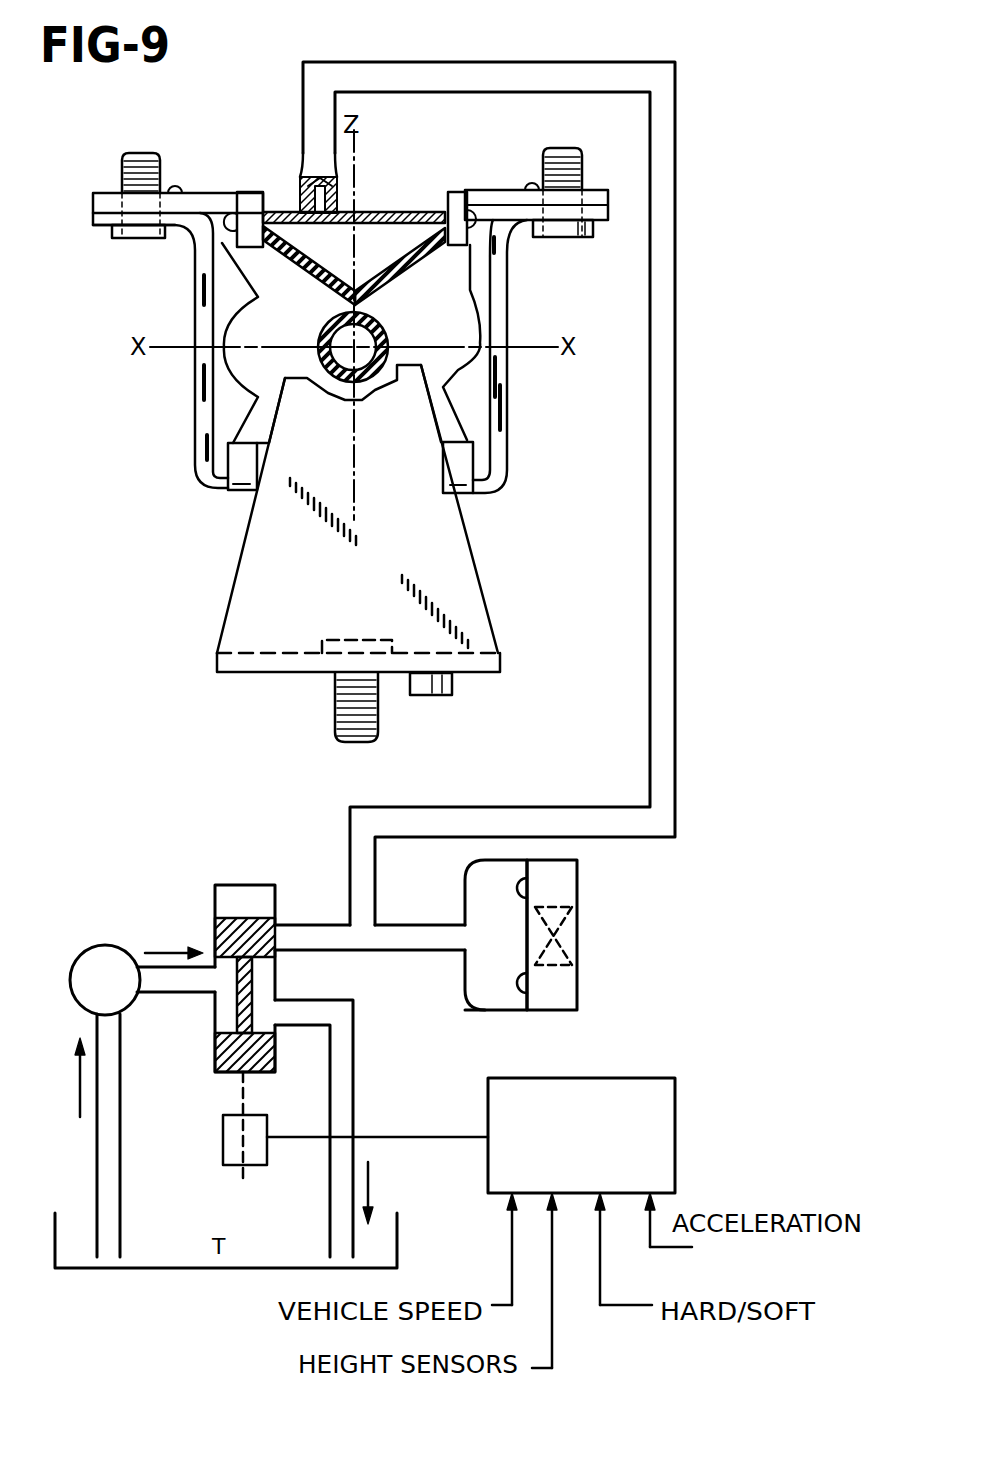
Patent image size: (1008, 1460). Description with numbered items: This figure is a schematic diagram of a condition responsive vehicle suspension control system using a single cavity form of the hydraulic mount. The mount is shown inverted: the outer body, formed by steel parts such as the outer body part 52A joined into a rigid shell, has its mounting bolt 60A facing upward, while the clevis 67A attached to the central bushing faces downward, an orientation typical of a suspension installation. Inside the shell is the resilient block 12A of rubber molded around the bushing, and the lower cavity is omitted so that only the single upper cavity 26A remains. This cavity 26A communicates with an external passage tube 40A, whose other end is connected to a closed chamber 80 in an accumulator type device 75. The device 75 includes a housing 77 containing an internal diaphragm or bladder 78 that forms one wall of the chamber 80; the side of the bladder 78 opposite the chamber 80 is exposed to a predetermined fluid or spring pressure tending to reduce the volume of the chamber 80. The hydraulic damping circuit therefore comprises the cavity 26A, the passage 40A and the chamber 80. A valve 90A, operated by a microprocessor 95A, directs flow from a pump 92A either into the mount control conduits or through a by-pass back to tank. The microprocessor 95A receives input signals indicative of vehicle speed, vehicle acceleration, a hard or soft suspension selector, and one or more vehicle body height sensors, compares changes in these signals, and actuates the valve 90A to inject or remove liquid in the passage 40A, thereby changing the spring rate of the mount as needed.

The resilient block 12A is at (458, 318).
The upper cavity 26A is at (382, 242).
The passage tube 40A is at (462, 78).
The outer body part 52A is at (200, 402).
The mounting bolt 60A is at (583, 158).
The clevis 67A is at (388, 580).
The accumulator type device 75 is at (535, 1017).
The housing 77 is at (473, 1012).
The diaphragm or bladder 78 is at (532, 902).
The closed chamber 80 is at (477, 960).
The valve 90A is at (215, 898).
The pump 92A is at (110, 945).
The microprocessor 95A is at (677, 1118).